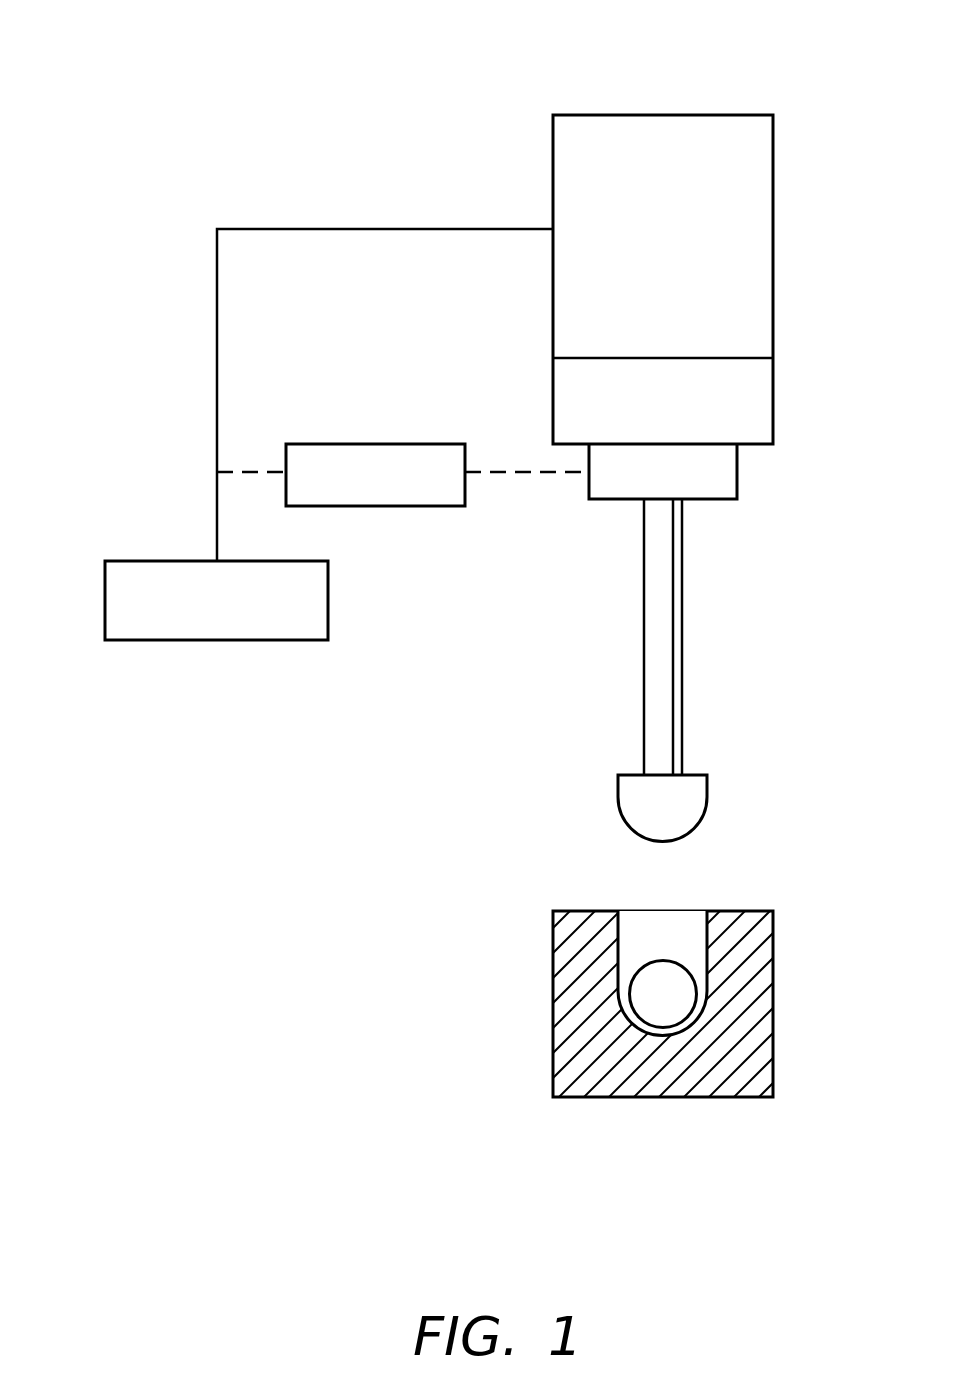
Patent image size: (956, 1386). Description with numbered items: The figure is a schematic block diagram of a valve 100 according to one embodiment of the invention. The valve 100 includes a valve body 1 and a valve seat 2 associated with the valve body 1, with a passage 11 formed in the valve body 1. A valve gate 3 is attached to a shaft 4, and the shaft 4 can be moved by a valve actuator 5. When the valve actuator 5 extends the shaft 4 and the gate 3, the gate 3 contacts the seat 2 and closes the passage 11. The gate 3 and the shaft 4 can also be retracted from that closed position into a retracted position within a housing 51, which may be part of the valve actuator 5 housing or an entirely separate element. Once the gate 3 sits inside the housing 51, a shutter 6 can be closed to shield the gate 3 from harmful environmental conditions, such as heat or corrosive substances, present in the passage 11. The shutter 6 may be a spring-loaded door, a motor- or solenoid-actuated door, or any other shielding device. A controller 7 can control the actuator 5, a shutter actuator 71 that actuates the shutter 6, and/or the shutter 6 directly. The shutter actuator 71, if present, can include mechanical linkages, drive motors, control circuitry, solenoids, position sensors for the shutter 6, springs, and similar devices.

The valve 100 is at (273, 91).
The valve actuator 5 is at (553, 115).
The housing 51 is at (773, 387).
The shutter 6 is at (737, 472).
The shaft 4 is at (682, 612).
The valve gate 3 is at (707, 805).
The valve seat 2 is at (675, 943).
The passage 11 is at (662, 972).
The valve body 1 is at (553, 1078).
The shutter actuator 71 is at (430, 506).
The controller 7 is at (146, 640).